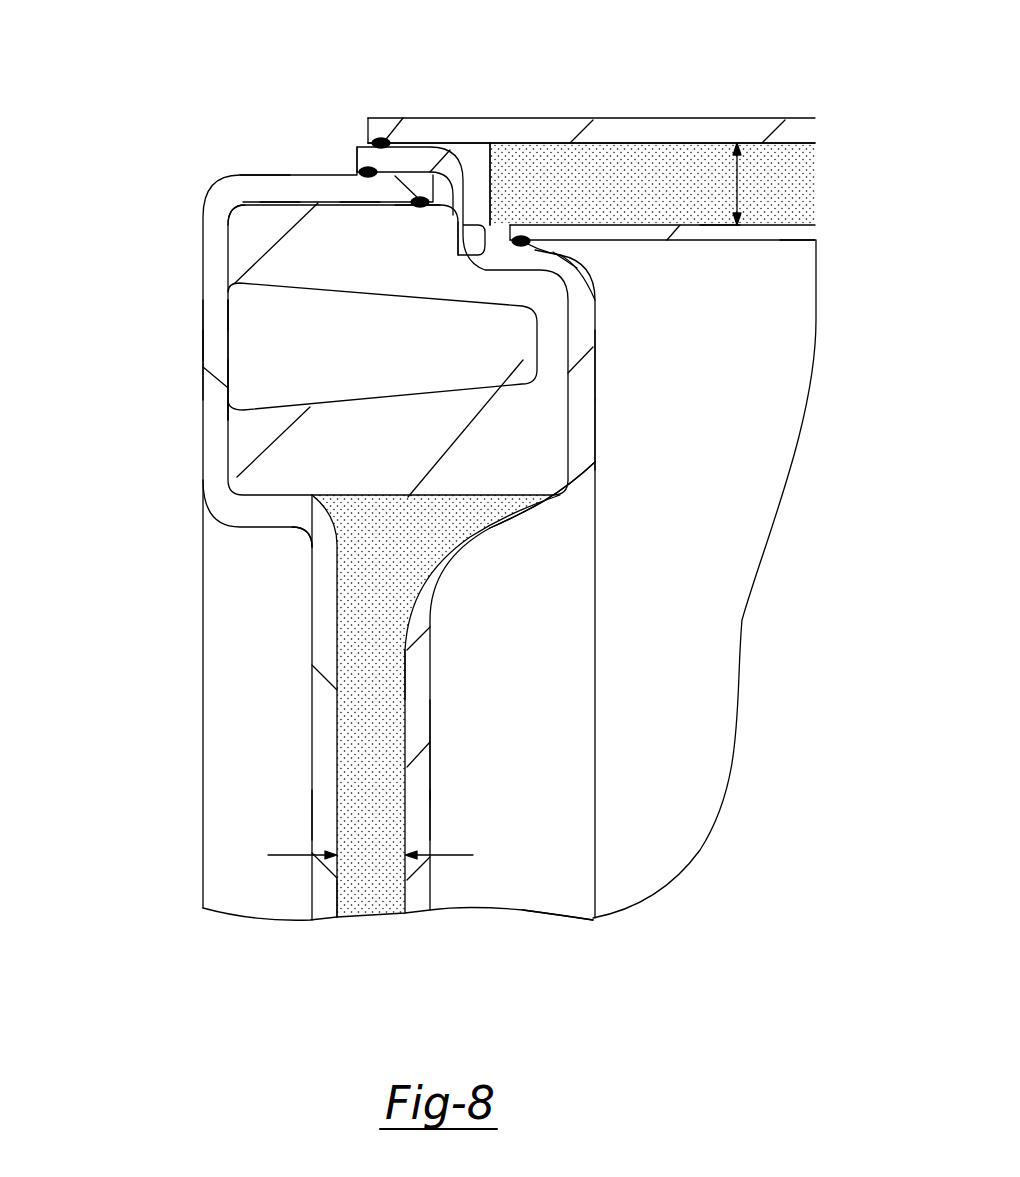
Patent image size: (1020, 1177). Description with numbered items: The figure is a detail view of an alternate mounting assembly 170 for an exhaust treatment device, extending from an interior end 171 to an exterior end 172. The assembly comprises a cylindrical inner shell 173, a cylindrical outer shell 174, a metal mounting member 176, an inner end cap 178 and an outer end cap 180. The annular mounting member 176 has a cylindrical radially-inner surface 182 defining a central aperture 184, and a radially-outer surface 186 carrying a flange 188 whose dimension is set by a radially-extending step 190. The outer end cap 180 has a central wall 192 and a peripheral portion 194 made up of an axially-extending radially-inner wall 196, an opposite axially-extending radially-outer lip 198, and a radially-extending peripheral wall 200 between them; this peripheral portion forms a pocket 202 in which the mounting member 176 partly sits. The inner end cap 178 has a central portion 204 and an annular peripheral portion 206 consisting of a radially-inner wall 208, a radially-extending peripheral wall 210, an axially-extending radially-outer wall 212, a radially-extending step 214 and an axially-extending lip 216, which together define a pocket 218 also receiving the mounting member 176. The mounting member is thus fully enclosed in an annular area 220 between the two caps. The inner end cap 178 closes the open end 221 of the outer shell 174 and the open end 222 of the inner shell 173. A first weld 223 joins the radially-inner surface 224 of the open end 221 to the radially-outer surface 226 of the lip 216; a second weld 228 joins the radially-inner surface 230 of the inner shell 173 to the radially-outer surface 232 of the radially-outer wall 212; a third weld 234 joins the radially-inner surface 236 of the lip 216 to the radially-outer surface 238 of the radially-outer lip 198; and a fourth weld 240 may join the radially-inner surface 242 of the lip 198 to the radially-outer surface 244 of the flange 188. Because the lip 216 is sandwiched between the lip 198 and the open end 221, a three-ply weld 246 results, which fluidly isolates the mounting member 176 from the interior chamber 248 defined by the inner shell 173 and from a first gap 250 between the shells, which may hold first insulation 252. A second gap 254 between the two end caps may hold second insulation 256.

The mounting assembly 170 is at (240, 208).
The interior end 171 is at (108, 172).
The exterior end 172 is at (825, 425).
The cylindrical inner shell 173 is at (753, 240).
The cylindrical outer shell 174 is at (638, 133).
The metal mounting member 176 is at (248, 253).
The inner end cap 178 is at (417, 693).
The outer end cap 180 is at (323, 685).
The cylindrical radially-inner surface 182 is at (312, 500).
The central aperture 184 is at (580, 750).
The radially-outer surface 186 is at (528, 250).
The flange 188 is at (308, 265).
The radially-extending step 190 is at (462, 258).
The central wall 192 is at (322, 818).
The peripheral portion 194 is at (205, 316).
The axially-extending radially-inner wall 196 is at (245, 510).
The axially-extending radially-outer lip 198 is at (277, 190).
The radially-extending peripheral wall 200 is at (208, 342).
The pocket 202 is at (242, 390).
The central portion 204 is at (417, 828).
The annular peripheral portion 206 is at (612, 365).
The radially-inner wall 208 is at (525, 523).
The radially-extending peripheral wall 210 is at (598, 428).
The axially-extending radially-outer wall 212 is at (530, 243).
The radially-extending step 214 is at (473, 193).
The axially-extending lip 216 is at (420, 158).
The pocket 218 is at (545, 348).
The annular area 220 is at (415, 507).
The open end 221 is at (372, 133).
The open end 222 is at (500, 210).
The first weld 223 is at (380, 136).
The radially-inner surface 224 is at (645, 150).
The radially-outer surface 226 is at (438, 143).
The second weld 228 is at (519, 232).
The radially-inner surface 230 is at (790, 245).
The radially-outer surface 232 is at (530, 232).
The third weld 234 is at (357, 207).
The radially-inner surface 236 is at (369, 180).
The radially-outer surface 238 is at (262, 175).
The fourth weld 240 is at (415, 212).
The radially-inner surface 242 is at (268, 205).
The radially-outer surface 244 is at (288, 201).
The three-ply weld 246 is at (432, 225).
The interior chamber 248 is at (523, 883).
The first gap 250 is at (740, 188).
The first insulation 252 is at (713, 213).
The second gap 254 is at (372, 853).
The second insulation 256 is at (373, 752).